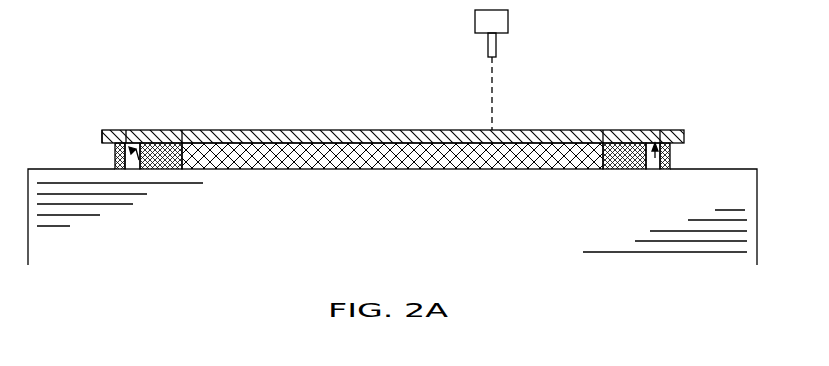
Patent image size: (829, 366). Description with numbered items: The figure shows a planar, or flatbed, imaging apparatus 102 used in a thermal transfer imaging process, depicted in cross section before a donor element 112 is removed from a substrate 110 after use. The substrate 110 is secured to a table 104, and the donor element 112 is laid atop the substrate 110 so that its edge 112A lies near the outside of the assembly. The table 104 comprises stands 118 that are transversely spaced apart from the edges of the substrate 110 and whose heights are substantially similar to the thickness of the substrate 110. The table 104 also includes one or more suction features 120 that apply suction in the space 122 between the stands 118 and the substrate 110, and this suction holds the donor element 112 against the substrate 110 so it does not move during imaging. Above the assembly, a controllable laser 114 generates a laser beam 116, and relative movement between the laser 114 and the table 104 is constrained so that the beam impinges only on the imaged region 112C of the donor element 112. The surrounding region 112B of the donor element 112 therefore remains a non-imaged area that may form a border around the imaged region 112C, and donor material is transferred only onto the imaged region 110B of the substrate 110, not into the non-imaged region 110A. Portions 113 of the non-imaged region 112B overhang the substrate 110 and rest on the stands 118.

The planar imaging apparatus 102 is at (287, 79).
The table 104 is at (264, 220).
The substrate 110 is at (385, 170).
The non-imaged region 110A is at (163, 168).
The imaged region 110B is at (392, 183).
The donor element 112 is at (384, 136).
The upper layer edge 112A is at (101, 133).
The non-imaged region 112B is at (162, 130).
The imaged region 112C is at (635, 107).
The overhanging portions 113 is at (125, 130).
The laser 114 is at (486, 20).
The laser beam 116 is at (494, 80).
The stands 118 is at (115, 160).
The suction features 120 is at (132, 170).
The space 122 is at (138, 163).